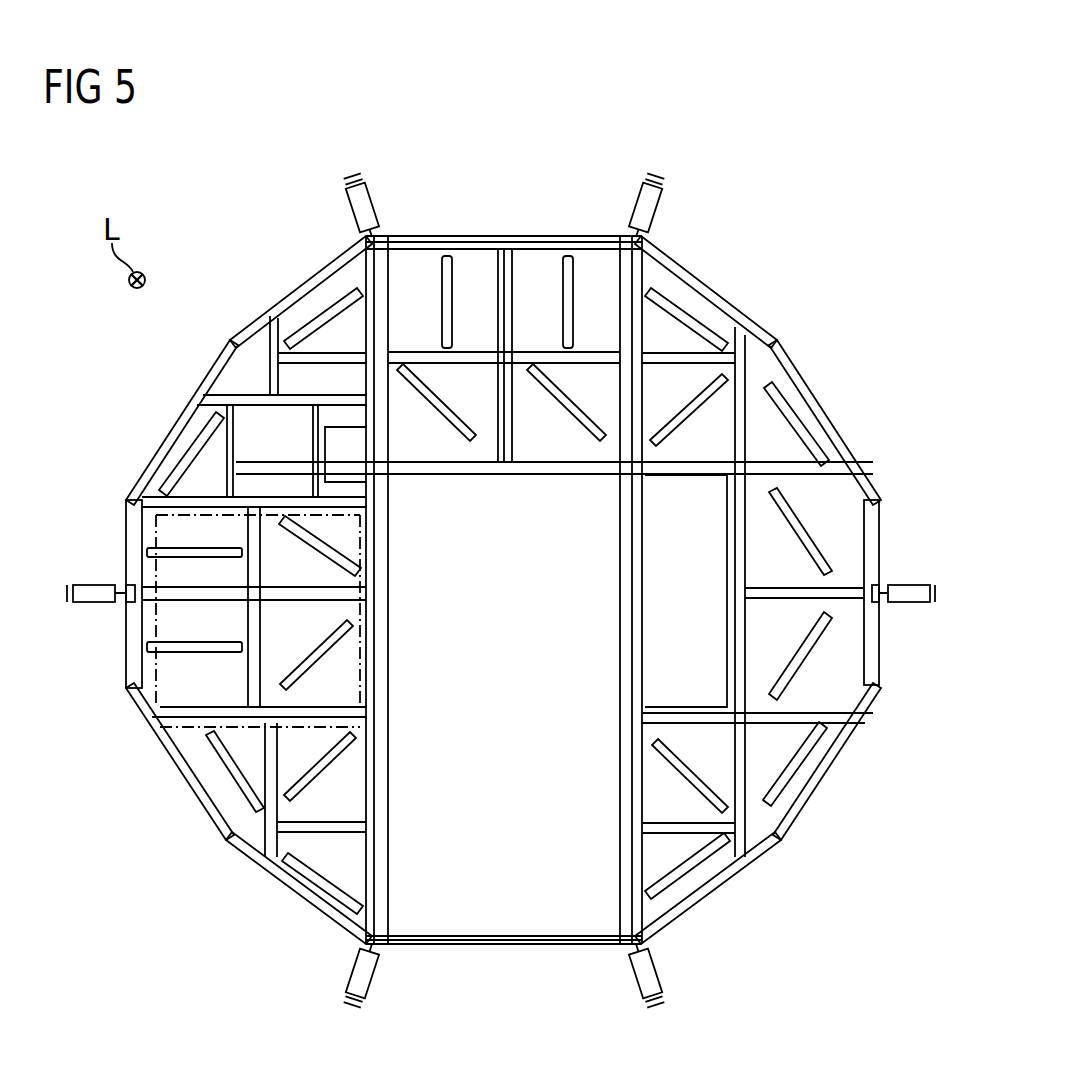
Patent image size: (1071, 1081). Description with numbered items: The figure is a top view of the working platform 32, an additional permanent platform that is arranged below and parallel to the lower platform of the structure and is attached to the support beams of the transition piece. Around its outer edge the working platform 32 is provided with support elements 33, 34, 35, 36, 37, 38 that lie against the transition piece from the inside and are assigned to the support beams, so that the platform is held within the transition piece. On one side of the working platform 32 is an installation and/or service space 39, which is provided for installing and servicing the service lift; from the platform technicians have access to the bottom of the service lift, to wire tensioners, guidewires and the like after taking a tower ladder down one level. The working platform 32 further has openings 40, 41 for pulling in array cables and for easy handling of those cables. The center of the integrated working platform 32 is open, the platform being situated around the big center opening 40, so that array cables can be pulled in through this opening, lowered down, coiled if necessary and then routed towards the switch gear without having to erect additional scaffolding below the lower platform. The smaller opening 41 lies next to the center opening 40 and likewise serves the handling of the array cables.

The working platform 32 is at (512, 180).
The support element 33 is at (936, 587).
The support element 34 is at (656, 1000).
The support element 35 is at (352, 1000).
The support element 36 is at (67, 587).
The support element 37 is at (355, 182).
The support element 38 is at (653, 182).
The installation and/or service space 39 is at (155, 665).
The opening 40 is at (517, 880).
The opening 41 is at (653, 658).